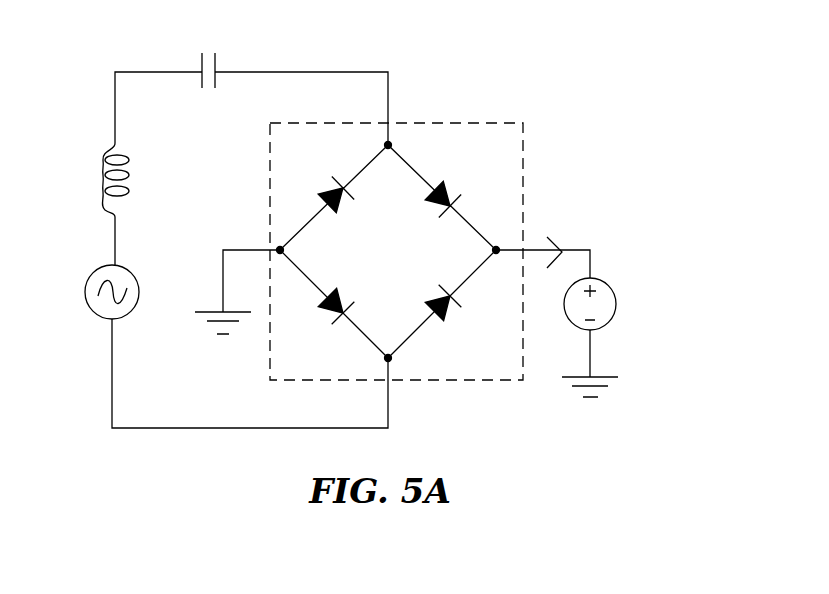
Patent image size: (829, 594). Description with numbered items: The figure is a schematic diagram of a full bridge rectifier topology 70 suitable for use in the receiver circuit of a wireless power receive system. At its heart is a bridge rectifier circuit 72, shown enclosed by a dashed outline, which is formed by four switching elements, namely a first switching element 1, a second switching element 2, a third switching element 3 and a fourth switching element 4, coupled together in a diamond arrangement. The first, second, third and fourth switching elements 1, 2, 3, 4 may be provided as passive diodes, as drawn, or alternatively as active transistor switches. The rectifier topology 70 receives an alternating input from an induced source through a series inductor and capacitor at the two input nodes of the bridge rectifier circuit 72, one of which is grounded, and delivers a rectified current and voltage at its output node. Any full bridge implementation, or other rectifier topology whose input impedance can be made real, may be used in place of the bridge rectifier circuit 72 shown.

The rectifier circuit 70 is at (369, 223).
The full-bridge diode rectifier 72 is at (405, 213).
The switching element D1 1 is at (446, 190).
The switching element D2 2 is at (431, 291).
The switching element D3 3 is at (338, 294).
The switching element D4 4 is at (322, 187).